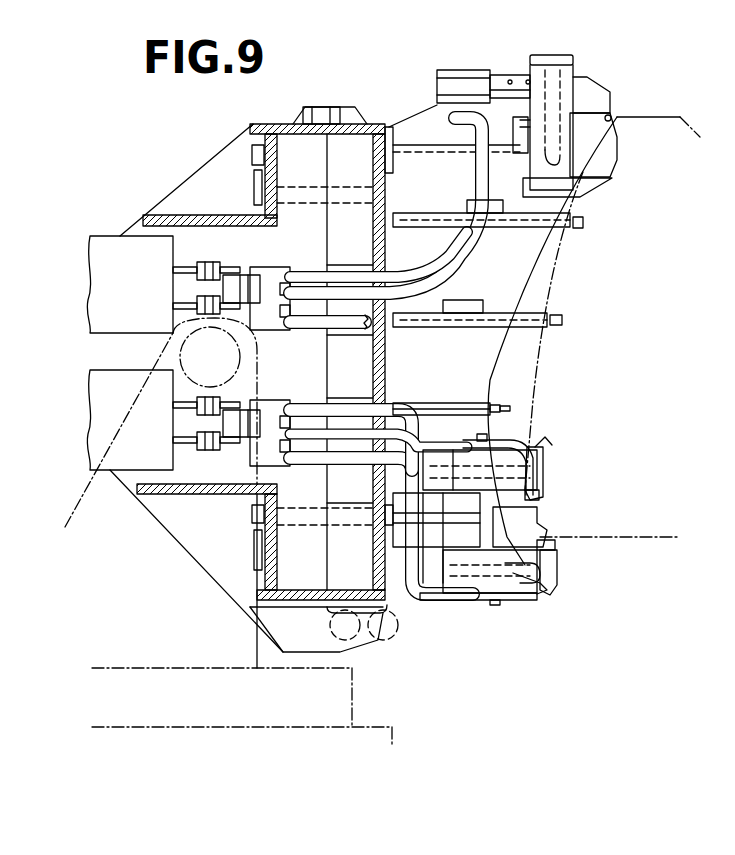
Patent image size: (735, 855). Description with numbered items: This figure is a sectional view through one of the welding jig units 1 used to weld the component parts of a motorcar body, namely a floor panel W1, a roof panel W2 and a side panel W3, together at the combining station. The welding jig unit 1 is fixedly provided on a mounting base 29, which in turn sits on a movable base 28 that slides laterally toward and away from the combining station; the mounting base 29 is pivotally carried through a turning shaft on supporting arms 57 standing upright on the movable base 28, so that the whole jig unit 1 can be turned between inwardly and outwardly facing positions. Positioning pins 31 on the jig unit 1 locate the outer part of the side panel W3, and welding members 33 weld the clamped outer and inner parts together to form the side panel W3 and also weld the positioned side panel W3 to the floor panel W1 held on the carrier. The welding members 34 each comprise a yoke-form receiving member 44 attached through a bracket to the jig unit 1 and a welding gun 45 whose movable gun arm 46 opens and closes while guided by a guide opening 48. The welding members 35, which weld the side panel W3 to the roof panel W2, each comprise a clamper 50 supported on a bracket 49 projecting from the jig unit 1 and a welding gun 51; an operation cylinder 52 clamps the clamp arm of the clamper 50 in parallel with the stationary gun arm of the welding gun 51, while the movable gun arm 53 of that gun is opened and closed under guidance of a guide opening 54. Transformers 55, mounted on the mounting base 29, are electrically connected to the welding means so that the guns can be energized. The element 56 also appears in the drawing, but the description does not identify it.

The welding jig unit 1 is at (388, 585).
The movable base 28 is at (228, 718).
The mounting base 29 is at (225, 148).
The positioning pins 31 is at (505, 405).
The welding members 33 is at (555, 310).
The welding members 34 is at (531, 610).
The welding members 35 is at (619, 81).
The receiving member 44 is at (538, 521).
The welding gun 45 is at (547, 490).
The movable gun arm 46 is at (545, 493).
The guide opening 48 is at (528, 447).
The bracket 49 is at (418, 118).
The clamper 50 is at (605, 98).
The welding gun 51 is at (610, 120).
The operation cylinder 52 is at (458, 77).
The movable gun arm 53 is at (603, 179).
The guide opening 54 is at (545, 170).
The transformer 55 is at (103, 392).
The manifold 56 is at (313, 300).
The supporting arms 57 is at (88, 484).
The floor panel W1 is at (633, 533).
The roof panel W2 is at (706, 136).
The side panel W3 is at (538, 362).